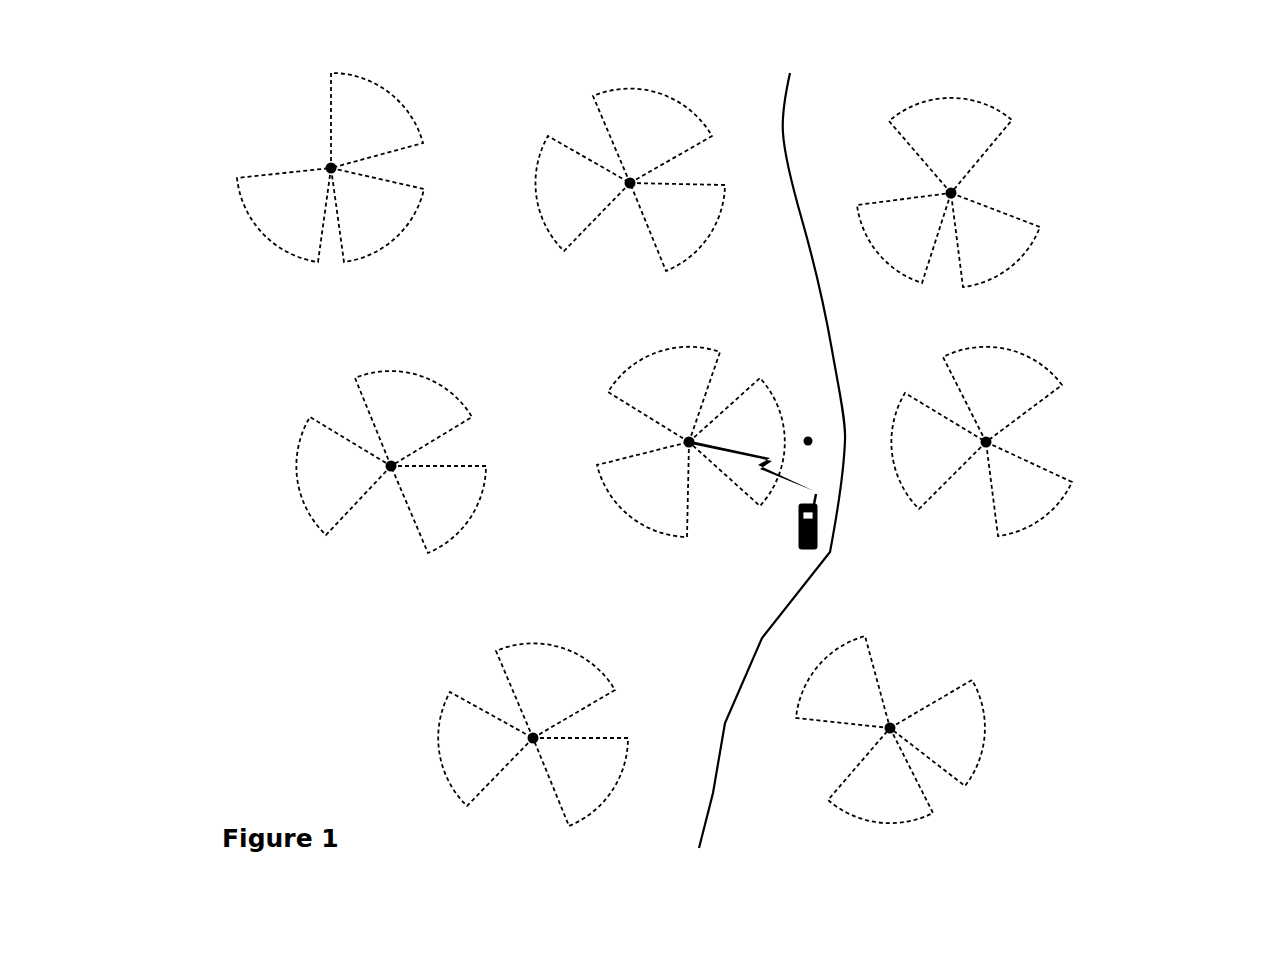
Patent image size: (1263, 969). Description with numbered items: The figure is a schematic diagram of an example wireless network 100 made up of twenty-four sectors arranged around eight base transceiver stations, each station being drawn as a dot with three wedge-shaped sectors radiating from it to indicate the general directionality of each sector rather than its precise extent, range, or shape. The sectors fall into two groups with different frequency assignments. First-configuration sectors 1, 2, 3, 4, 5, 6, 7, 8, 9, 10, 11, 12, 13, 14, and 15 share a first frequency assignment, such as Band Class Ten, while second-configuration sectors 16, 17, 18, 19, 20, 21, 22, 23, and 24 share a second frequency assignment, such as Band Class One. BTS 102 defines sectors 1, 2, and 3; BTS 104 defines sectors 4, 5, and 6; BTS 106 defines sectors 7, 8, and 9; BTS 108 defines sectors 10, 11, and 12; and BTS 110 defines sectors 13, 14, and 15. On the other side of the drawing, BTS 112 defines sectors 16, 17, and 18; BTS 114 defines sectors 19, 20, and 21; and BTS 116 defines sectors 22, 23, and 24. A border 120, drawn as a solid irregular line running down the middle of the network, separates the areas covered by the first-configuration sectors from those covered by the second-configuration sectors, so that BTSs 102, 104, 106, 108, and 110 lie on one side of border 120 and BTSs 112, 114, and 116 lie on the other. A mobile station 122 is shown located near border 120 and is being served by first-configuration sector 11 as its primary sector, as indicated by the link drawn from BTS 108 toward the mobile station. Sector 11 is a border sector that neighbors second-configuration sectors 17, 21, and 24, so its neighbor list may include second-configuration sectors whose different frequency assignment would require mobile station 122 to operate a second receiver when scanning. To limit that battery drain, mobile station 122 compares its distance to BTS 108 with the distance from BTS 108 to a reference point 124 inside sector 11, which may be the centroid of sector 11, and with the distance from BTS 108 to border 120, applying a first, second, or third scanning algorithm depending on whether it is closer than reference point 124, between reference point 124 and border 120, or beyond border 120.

The wireless network 100 is at (1165, 125).
The first-configuration sector 1 is at (358, 133).
The first-configuration sector 2 is at (366, 220).
The first-configuration sector 3 is at (283, 220).
The first-configuration sector 4 is at (635, 137).
The first-configuration sector 5 is at (671, 226).
The first-configuration sector 6 is at (561, 202).
The first-configuration sector 7 is at (401, 417).
The first-configuration sector 8 is at (438, 512).
The first-configuration sector 9 is at (323, 482).
The first-configuration sector 10 is at (659, 400).
The first-configuration sector 11 is at (741, 443).
The first-configuration sector 12 is at (641, 495).
The first-configuration sector 13 is at (540, 696).
The first-configuration sector 14 is at (575, 781).
The first-configuration sector 15 is at (462, 758).
The second-configuration sector 16 is at (975, 251).
The second-configuration sector 17 is at (892, 247).
The second-configuration sector 18 is at (938, 142).
The second-configuration sector 19 is at (985, 392).
The second-configuration sector 20 is at (1011, 500).
The second-configuration sector 21 is at (914, 458).
The second-configuration sector 22 is at (939, 744).
The second-configuration sector 23 is at (874, 791).
The second-configuration sector 24 is at (831, 698).
The base transceiver station 102 is at (329, 165).
The base transceiver station 104 is at (628, 185).
The base transceiver station 106 is at (389, 468).
The base transceiver station 108 is at (687, 441).
The base transceiver station 110 is at (531, 740).
The base transceiver station 112 is at (949, 191).
The base transceiver station 114 is at (984, 444).
The base transceiver station 116 is at (892, 726).
The border 120 is at (784, 132).
The mobile station 122 is at (797, 528).
The reference point 124 is at (806, 438).